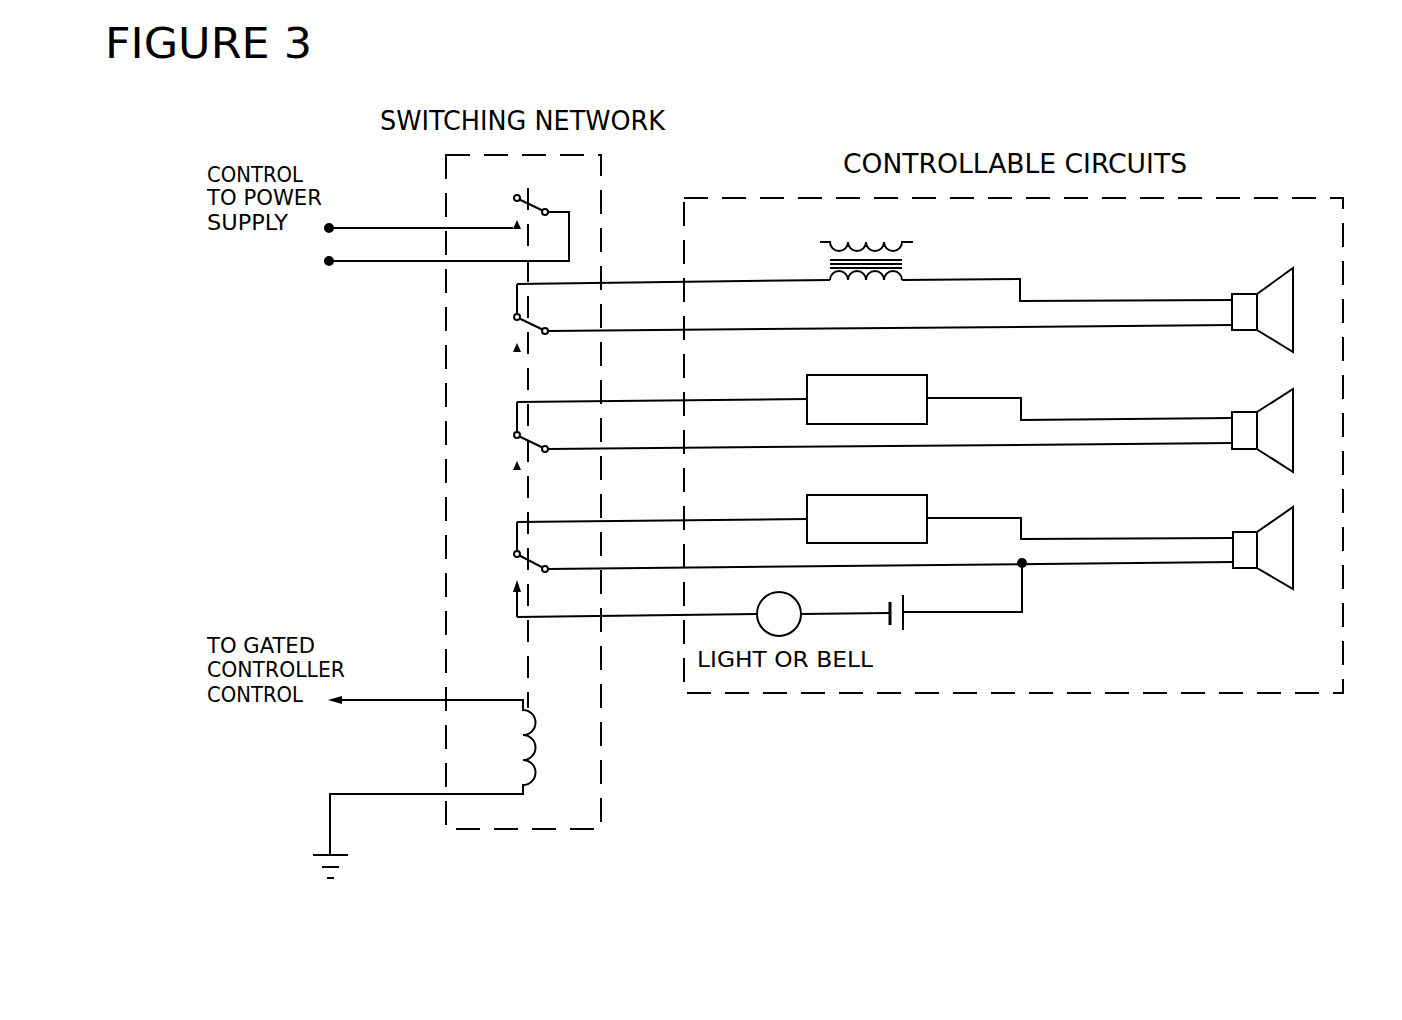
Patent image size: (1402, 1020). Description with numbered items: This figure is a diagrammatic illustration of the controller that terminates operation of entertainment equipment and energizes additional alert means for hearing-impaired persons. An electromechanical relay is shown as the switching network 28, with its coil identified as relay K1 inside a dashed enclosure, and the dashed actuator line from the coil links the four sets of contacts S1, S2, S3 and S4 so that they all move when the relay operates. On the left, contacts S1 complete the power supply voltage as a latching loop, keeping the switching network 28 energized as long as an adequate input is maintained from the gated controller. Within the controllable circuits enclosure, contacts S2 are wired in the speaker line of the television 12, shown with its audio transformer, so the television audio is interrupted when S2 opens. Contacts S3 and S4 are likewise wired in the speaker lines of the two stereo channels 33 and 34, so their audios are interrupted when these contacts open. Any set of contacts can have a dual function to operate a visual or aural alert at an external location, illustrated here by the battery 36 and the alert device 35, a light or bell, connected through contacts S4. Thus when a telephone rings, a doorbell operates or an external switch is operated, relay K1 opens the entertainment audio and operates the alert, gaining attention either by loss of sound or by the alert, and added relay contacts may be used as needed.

The television 12 is at (910, 259).
The stereo 33 is at (927, 388).
The stereo 34 is at (927, 507).
The alert device 35 is at (779, 614).
The battery 36 is at (903, 625).
The switching network 28 is at (489, 787).
The relay contacts S1 is at (518, 212).
The relay contacts S2 is at (515, 318).
The relay contacts S3 is at (515, 436).
The relay contacts S4 is at (515, 569).
The relay K1 is at (554, 737).